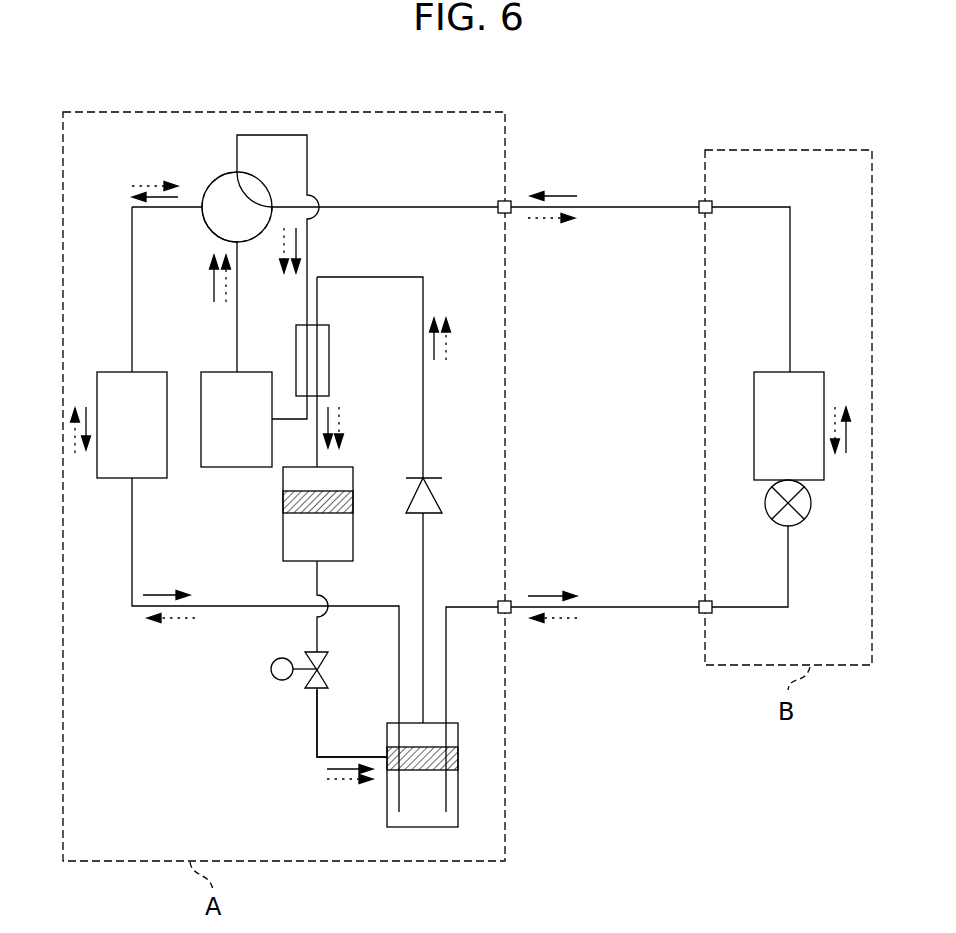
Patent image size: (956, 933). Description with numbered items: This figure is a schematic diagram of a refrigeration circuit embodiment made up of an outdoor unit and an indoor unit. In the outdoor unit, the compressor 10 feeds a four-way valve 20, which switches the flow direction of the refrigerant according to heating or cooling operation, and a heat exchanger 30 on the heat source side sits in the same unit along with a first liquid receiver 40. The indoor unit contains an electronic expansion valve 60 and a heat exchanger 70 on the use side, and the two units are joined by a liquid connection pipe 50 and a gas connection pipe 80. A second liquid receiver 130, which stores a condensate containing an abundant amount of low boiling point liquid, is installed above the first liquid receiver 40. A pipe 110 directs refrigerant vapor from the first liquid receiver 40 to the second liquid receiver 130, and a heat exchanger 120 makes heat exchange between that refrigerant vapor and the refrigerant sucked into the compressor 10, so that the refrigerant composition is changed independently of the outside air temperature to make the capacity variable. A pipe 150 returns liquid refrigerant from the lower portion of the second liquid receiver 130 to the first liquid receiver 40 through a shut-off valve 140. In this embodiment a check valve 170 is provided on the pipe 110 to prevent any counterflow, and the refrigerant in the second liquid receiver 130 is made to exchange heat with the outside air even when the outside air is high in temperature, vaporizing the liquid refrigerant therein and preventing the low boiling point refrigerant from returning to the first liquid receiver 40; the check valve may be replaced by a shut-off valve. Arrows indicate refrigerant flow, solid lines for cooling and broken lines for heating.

The compressor 10 is at (230, 467).
The four-way valve 20 is at (223, 175).
The heat exchanger on a heat source side 30 is at (150, 372).
The first liquid receiver 40 is at (387, 795).
The liquid connection pipe 50 is at (617, 608).
The electronic expansion valve 60 is at (797, 527).
The heat exchanger on a use side 70 is at (805, 372).
The gas connection pipe 80 is at (618, 206).
The pipe 110 is at (423, 428).
The heat exchanger 120 is at (330, 360).
The second liquid receiver 130 is at (283, 540).
The shut-off valve 140 is at (272, 669).
The pipe 150 is at (317, 730).
The check valve 170 is at (433, 517).